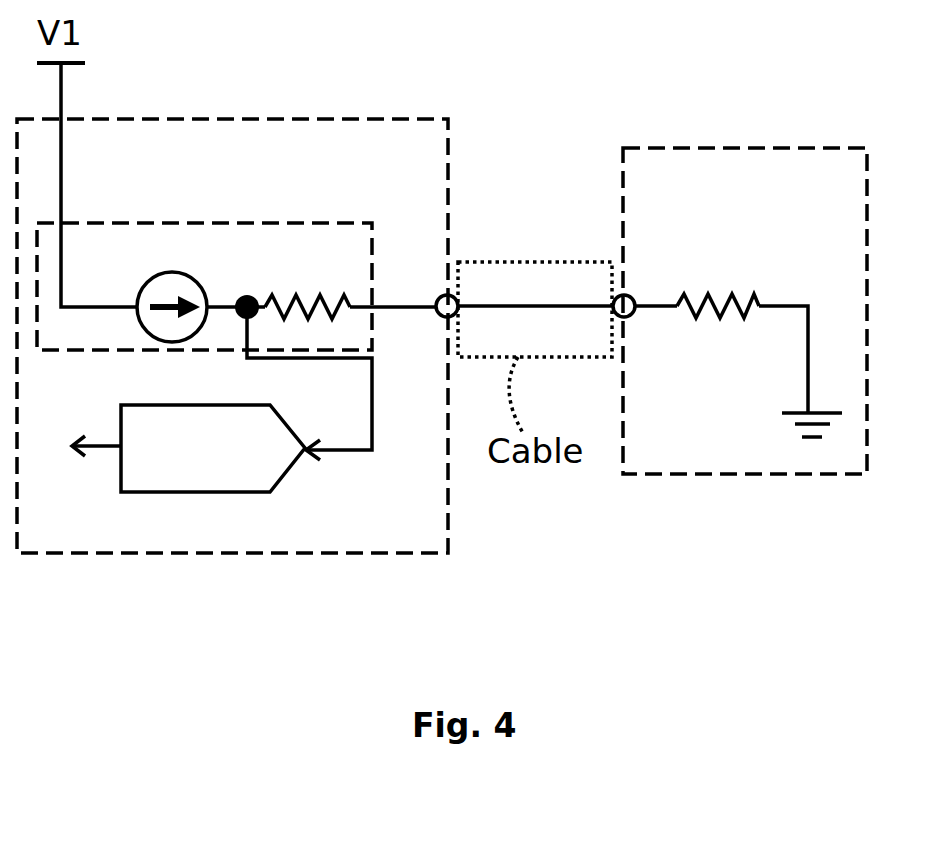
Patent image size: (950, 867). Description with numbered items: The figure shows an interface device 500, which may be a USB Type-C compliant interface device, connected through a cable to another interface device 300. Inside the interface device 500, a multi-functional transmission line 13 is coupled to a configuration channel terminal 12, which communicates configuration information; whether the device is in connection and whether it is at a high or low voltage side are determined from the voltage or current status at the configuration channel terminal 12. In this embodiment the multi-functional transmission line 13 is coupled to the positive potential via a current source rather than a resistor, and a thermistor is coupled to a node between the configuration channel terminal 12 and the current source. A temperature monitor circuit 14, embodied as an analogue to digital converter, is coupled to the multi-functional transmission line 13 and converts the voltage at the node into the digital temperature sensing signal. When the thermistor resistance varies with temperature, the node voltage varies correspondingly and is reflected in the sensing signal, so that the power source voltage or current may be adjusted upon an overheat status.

The interface device 500 is at (283, 118).
The multi-functional transmission line 13 is at (325, 222).
The configuration channel terminal 12 is at (436, 297).
The temperature monitor circuit 14 is at (287, 472).
The interface device 300 is at (713, 152).